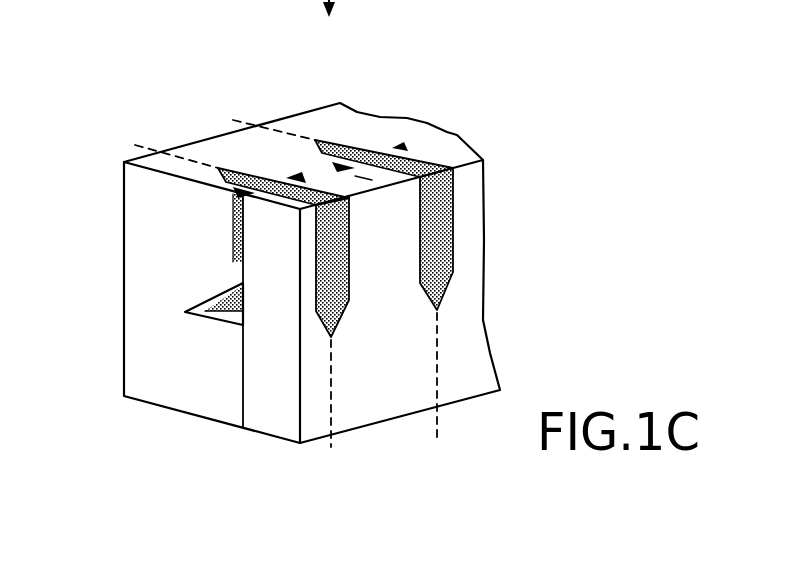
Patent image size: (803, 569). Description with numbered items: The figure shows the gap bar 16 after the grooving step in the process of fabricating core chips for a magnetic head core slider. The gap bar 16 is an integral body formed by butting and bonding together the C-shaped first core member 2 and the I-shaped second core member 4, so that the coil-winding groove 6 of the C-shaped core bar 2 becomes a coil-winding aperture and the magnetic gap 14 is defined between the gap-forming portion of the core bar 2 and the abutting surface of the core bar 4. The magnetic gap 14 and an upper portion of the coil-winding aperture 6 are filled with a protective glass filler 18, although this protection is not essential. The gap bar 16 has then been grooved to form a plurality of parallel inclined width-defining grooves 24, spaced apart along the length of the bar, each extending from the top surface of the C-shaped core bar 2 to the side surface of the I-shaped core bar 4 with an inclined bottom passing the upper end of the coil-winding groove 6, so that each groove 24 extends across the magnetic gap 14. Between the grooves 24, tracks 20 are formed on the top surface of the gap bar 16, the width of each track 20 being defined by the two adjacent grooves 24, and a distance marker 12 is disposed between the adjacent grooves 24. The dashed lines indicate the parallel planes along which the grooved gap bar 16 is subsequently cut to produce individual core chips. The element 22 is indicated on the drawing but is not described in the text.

The first core member 2 is at (142, 193).
The second core member 4 is at (480, 360).
The coil-winding groove 6 is at (205, 312).
The distance marker 12 is at (313, 172).
The magnetic gap 14 is at (222, 263).
The gap bar 16 is at (436, 97).
The protective glass filler 18 is at (230, 317).
The track 20 is at (370, 178).
The tape strip on top face 22 is at (243, 172).
The inclined width-defining groove 24 is at (340, 295).